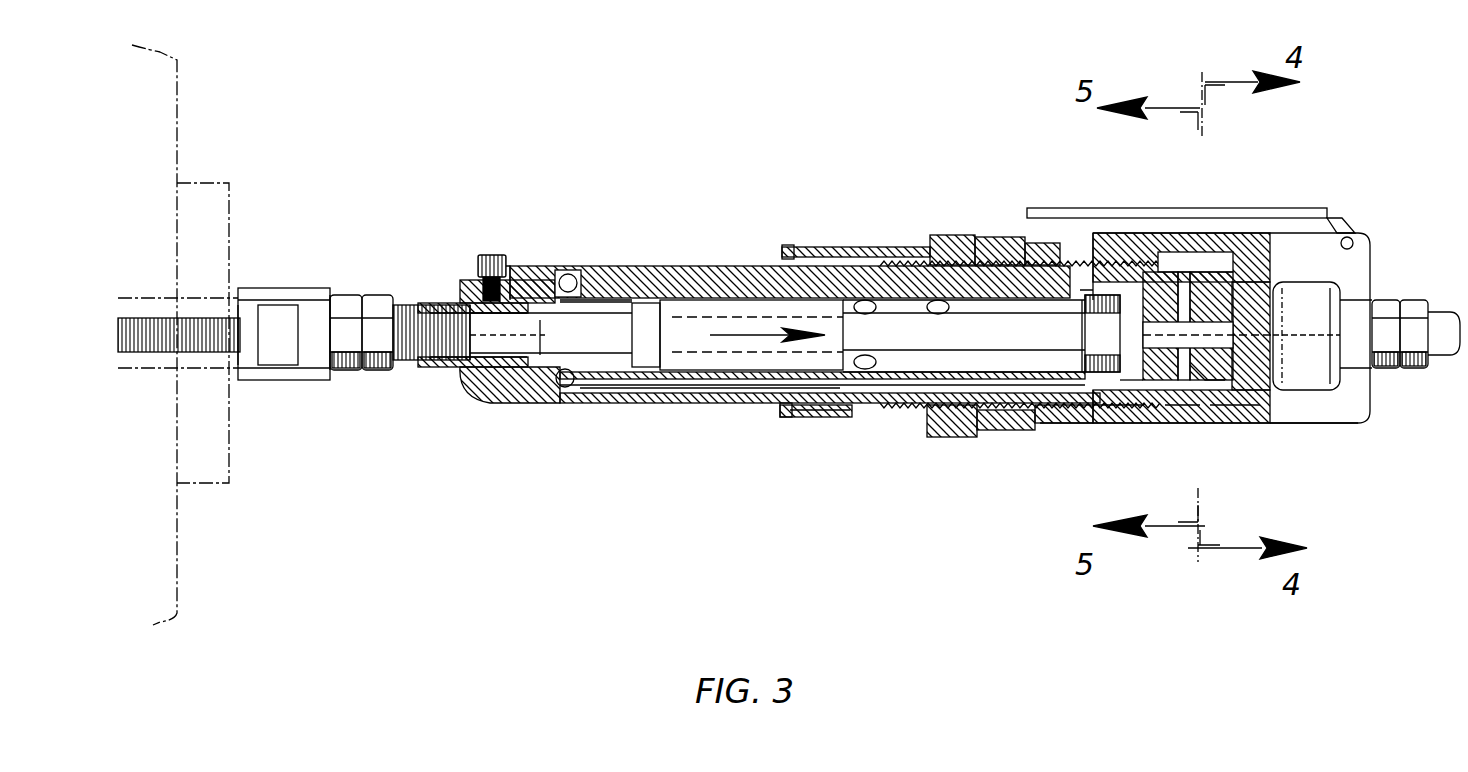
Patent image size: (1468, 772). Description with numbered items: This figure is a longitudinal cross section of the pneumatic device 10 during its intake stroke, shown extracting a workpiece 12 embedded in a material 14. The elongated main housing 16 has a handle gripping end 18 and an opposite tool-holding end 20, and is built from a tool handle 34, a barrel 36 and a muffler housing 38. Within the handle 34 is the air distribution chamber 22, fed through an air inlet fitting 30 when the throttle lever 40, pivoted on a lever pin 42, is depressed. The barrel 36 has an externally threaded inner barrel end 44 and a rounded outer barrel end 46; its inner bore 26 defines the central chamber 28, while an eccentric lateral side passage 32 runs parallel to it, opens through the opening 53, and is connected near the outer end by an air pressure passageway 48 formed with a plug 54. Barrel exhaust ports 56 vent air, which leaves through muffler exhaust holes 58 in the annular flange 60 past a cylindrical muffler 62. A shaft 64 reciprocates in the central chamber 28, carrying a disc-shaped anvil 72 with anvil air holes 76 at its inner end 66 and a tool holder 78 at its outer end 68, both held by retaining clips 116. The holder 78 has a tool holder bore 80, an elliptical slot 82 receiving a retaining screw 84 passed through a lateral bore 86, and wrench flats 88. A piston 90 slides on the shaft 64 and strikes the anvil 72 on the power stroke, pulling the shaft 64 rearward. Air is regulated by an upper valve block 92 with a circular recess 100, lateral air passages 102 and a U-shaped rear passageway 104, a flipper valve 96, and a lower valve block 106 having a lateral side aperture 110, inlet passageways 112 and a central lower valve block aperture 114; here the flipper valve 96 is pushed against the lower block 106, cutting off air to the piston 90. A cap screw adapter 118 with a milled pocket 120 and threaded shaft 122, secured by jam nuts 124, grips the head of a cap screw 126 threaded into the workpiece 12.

The pneumatic device 10 is at (918, 495).
The workpiece 12 is at (179, 333).
The material 14 is at (180, 133).
The main housing 16 is at (1010, 152).
The handle gripping end 18 is at (1378, 445).
The tool-holding end 20 is at (548, 520).
The air distribution chamber 22 is at (1235, 270).
The inner bore 26 is at (612, 300).
The central chamber 28 is at (605, 266).
The air inlet fitting 30 is at (1410, 300).
The lateral side passage 32 is at (628, 425).
The tool handle 34 is at (1340, 427).
The barrel 36 is at (700, 266).
The muffler housing 38 is at (893, 247).
The throttle lever 40 is at (1068, 208).
The lever pin 42 is at (1355, 240).
The inner barrel end 44 is at (1125, 410).
The outer barrel end 46 is at (470, 378).
The air pressure passageway 48 is at (558, 412).
The opening 53 is at (1148, 400).
The plug 54 is at (572, 272).
The barrel exhaust ports 56 is at (938, 314).
The muffler exhaust holes 58 is at (786, 258).
The annular flange 60 is at (758, 455).
The muffler 62 is at (858, 430).
The shaft 64 is at (872, 336).
The inner end 66 is at (1020, 232).
The outer end 68 is at (535, 350).
The anvil 72 is at (1093, 440).
The anvil air holes 76 is at (1090, 290).
The tool holder 78 is at (400, 360).
The tool holder bore 80 is at (392, 372).
The elliptical slot 82 is at (450, 300).
The retaining screw 84 is at (505, 228).
The lateral bore 86 is at (522, 280).
The wrench flats 88 is at (420, 303).
The piston 90 is at (660, 405).
The upper valve block 92 is at (1240, 290).
The flipper valve 96 is at (1200, 372).
The circular recess 100 is at (1210, 300).
The lateral air passages 102 is at (1306, 336).
The rear passageway 104 is at (1306, 351).
The lower valve block 106 is at (1225, 430).
The lateral side aperture 110 is at (1170, 425).
The inlet passageways 112 is at (1195, 280).
The central lower valve block aperture 114 is at (1140, 300).
The retaining clips 116 is at (508, 325).
The cap screw adapter 118 is at (340, 290).
The milled pocket 120 is at (290, 290).
The threaded shaft 122 is at (385, 295).
The jam nuts 124 is at (348, 370).
The cap screw 126 is at (272, 348).